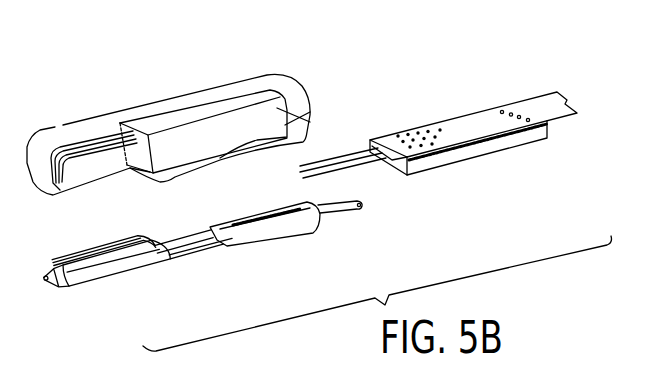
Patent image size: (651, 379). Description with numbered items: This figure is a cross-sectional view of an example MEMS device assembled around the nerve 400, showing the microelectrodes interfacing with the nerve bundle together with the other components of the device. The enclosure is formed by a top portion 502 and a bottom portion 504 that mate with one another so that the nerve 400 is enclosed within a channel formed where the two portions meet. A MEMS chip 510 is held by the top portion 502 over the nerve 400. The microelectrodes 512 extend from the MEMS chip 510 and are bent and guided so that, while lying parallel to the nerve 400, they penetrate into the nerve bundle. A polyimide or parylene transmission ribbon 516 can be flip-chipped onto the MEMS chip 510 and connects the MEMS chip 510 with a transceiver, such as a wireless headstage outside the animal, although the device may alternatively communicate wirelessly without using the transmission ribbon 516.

The nerve 400 is at (332, 210).
The top portion 502 is at (178, 103).
The bottom portion 504 is at (183, 253).
The MEMS chip 510 is at (428, 136).
The microelectrodes 512 is at (347, 152).
The transmission ribbon 516 is at (528, 107).